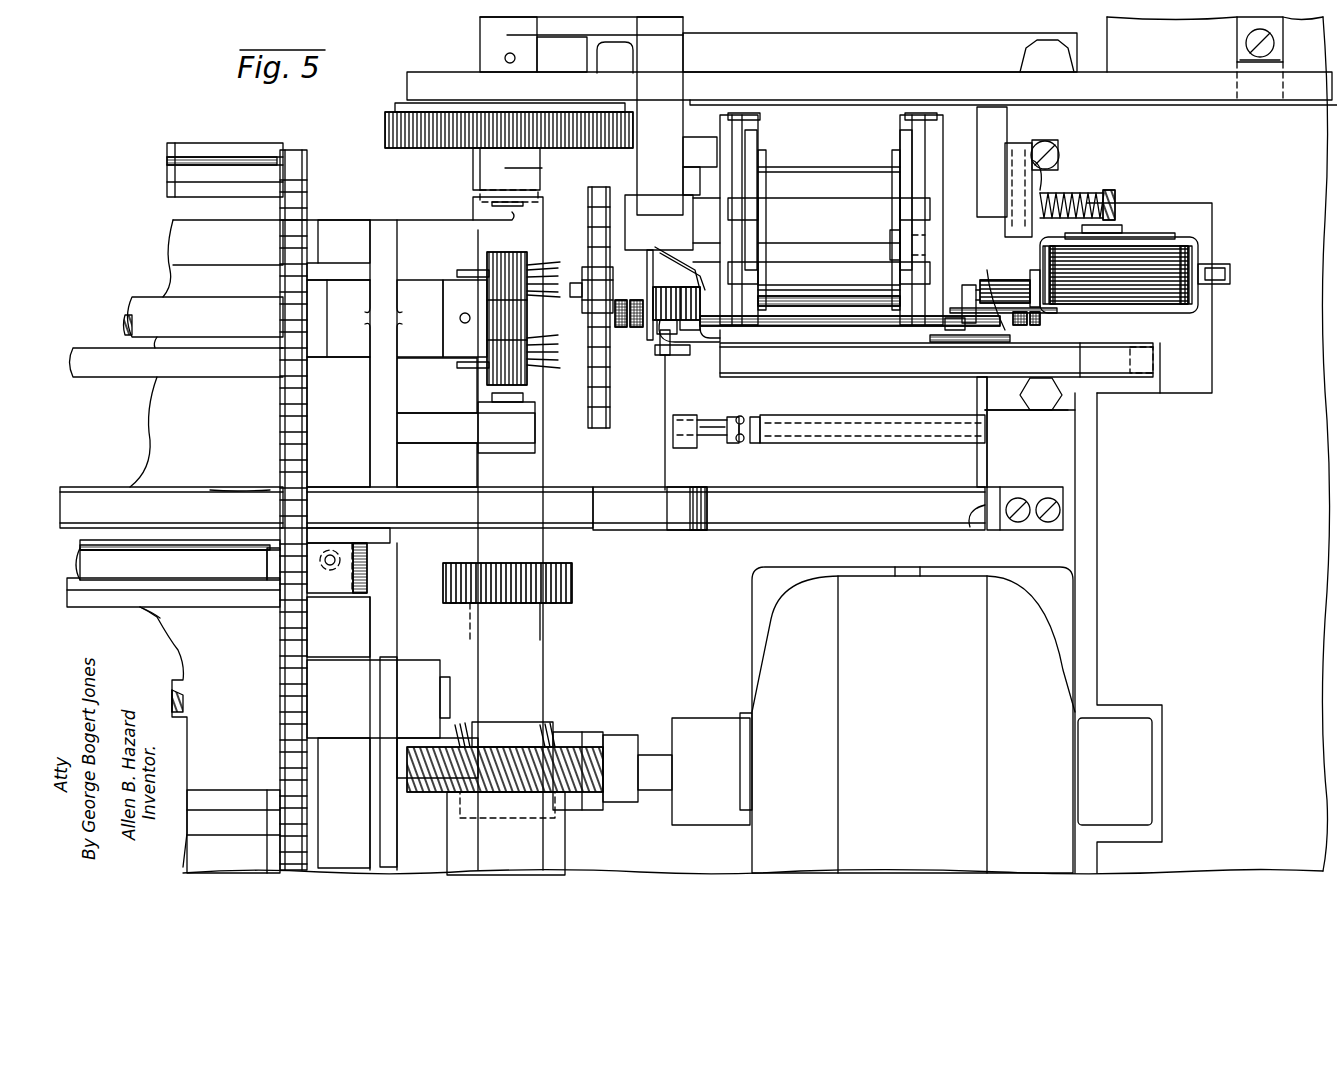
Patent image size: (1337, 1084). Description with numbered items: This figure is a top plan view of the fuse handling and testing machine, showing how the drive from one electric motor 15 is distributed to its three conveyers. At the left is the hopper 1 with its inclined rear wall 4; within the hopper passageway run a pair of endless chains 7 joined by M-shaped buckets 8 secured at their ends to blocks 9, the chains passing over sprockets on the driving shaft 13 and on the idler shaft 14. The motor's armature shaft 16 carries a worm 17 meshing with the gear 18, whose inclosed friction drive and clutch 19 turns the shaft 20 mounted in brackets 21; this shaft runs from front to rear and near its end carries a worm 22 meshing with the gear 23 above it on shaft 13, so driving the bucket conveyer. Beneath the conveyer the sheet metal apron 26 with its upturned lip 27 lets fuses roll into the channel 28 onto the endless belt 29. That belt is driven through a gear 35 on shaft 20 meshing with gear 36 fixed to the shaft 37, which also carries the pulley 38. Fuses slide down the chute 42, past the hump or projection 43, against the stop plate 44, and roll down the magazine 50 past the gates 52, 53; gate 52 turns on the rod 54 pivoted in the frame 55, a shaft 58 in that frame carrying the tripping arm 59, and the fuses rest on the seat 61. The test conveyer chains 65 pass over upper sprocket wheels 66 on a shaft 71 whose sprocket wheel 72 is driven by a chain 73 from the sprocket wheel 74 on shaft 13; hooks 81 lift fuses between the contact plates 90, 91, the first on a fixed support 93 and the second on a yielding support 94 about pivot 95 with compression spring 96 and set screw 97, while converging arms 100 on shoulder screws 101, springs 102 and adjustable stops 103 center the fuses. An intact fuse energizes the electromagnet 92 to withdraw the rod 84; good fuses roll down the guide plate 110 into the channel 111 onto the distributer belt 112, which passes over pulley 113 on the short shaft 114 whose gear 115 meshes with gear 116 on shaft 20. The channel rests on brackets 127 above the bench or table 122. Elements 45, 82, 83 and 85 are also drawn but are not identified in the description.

The hopper 1 is at (148, 397).
The rear wall 4 is at (170, 280).
The endless chains 7 is at (307, 193).
The troughs or buckets 8 is at (242, 155).
The blocks 9 is at (268, 564).
The driving shaft 13 is at (125, 308).
The idler shaft 14 is at (185, 680).
The electric motor 15 is at (872, 590).
The armature shaft 16 is at (650, 762).
The worm 17 is at (555, 727).
The gear 18 is at (593, 800).
The friction drive and clutch 19 is at (565, 847).
The shaft 20 is at (492, 393).
The brackets 21 is at (542, 228).
The worm 22 is at (540, 275).
The gear 23 is at (527, 260).
The sheet metal apron 26 is at (180, 640).
The lip 27 is at (192, 548).
The channel 28 is at (235, 500).
The endless belt 29 is at (165, 500).
The gear 35 is at (572, 598).
The gear 36 is at (552, 605).
The shaft 37 is at (525, 398).
The pulley 38 is at (580, 490).
The chute 42 is at (632, 497).
The hump or projection 43 is at (688, 497).
The stop plate 44 is at (975, 527).
The clamp block 45 is at (1065, 538).
The magazine 50 is at (975, 466).
The gate 52 is at (737, 440).
The second gate 53 is at (695, 355).
The rod 54 is at (698, 430).
The frame 55 is at (987, 442).
The shaft 58 is at (710, 425).
The tripping arm 59 is at (760, 412).
The seat 61 is at (850, 295).
The chains 65 is at (728, 165).
The upper sprocket wheels 66 is at (720, 185).
The shaft 71 is at (835, 248).
The sprocket wheel 72 is at (635, 200).
The chain 73 is at (605, 355).
The sprocket wheel 74 is at (580, 315).
The hook 81 is at (725, 150).
The roller 82 is at (750, 183).
The bar 83 is at (815, 200).
The rod 84 is at (905, 240).
The slide bar 85 is at (1153, 357).
The contact plate 90 is at (693, 287).
The contact plate 91 is at (968, 290).
The electromagnet 92 is at (1160, 248).
The fixed support 93 is at (665, 256).
The yielding support 94 is at (1040, 177).
The pivot 95 is at (1050, 143).
The compression spring 96 is at (1090, 195).
The set screw 97 is at (1100, 230).
The converging arms 100 is at (705, 335).
The shoulder screws 101 is at (660, 333).
The springs 102 is at (660, 285).
The adjustable stops 103 is at (1020, 328).
The guide plate 110 is at (825, 160).
The channel 111 is at (785, 65).
The distributer belt 112 is at (870, 72).
The pulley 113 is at (428, 72).
The short shaft 114 is at (495, 203).
The gear 115 is at (420, 135).
The gear 116 is at (385, 130).
The bench or table 122 is at (1150, 709).
The supports or brackets 127 is at (1283, 62).